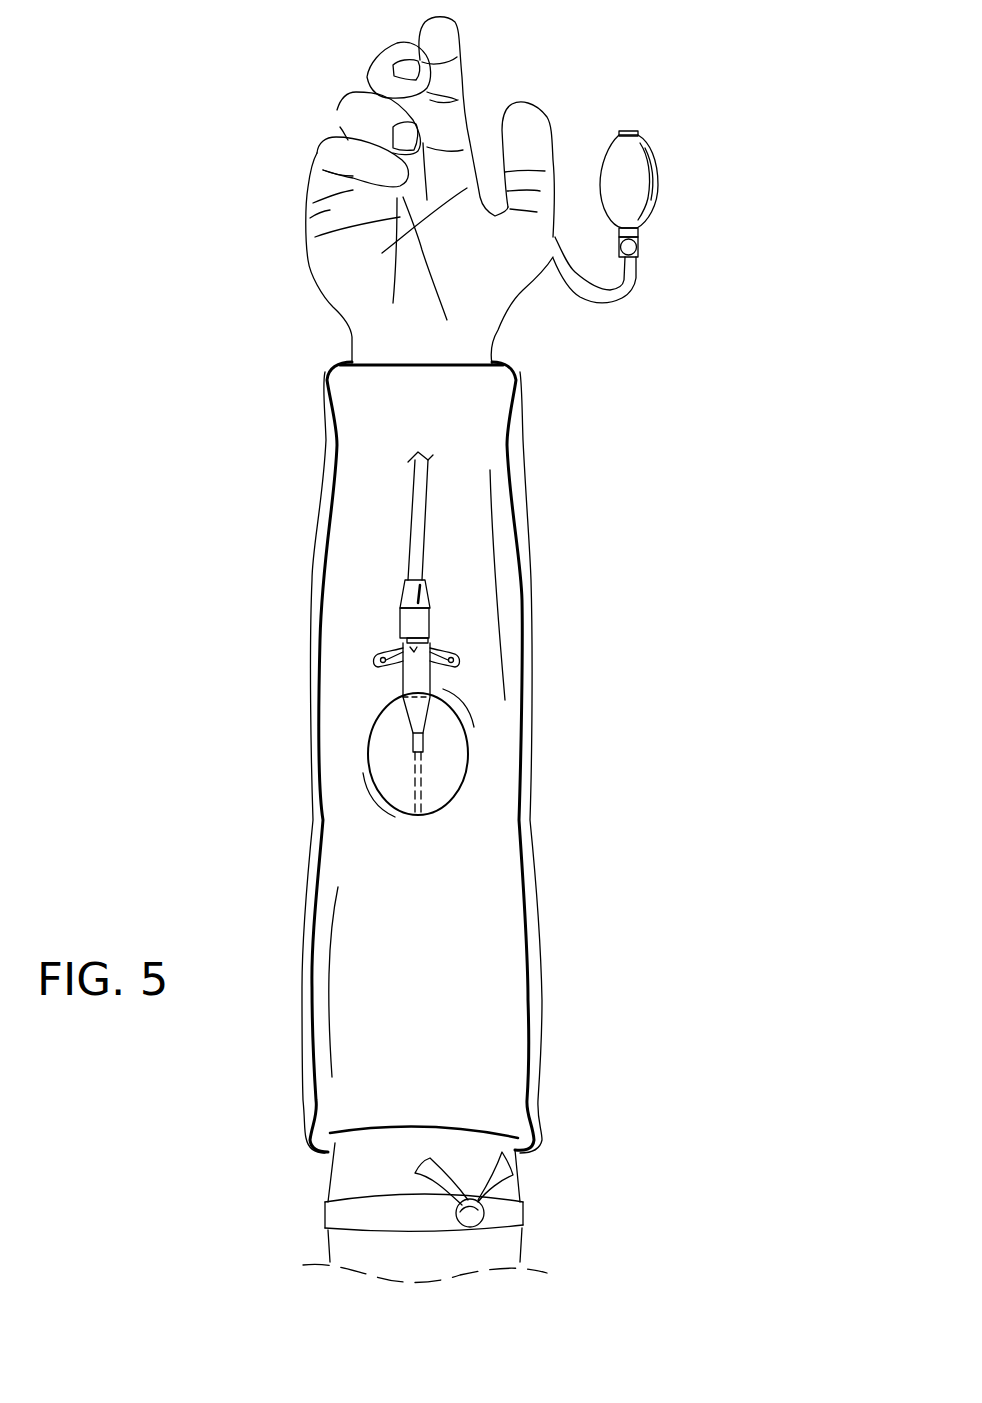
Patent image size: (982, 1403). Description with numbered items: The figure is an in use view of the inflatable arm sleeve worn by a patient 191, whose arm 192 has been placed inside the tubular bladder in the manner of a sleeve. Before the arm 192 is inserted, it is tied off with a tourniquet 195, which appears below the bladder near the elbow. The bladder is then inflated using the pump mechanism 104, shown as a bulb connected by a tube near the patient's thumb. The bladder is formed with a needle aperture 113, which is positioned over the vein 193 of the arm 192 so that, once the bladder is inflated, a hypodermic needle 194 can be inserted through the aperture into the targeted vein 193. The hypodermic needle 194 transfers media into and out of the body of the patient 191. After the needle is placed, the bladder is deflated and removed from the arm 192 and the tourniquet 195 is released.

The patient 191 is at (259, 149).
The pump mechanism 104 is at (693, 180).
The hypodermic needle 194 is at (422, 680).
The needle aperture 113 is at (443, 767).
The vein 193 is at (423, 790).
The arm 192 is at (350, 1173).
The tourniquet 195 is at (522, 1215).